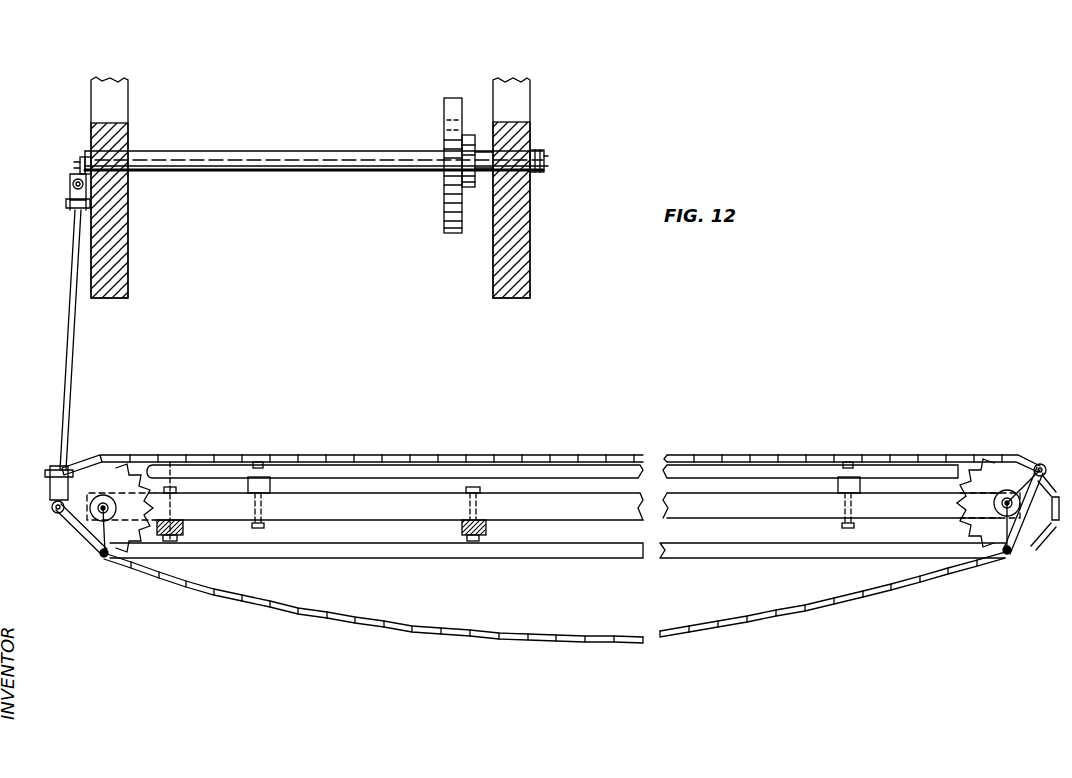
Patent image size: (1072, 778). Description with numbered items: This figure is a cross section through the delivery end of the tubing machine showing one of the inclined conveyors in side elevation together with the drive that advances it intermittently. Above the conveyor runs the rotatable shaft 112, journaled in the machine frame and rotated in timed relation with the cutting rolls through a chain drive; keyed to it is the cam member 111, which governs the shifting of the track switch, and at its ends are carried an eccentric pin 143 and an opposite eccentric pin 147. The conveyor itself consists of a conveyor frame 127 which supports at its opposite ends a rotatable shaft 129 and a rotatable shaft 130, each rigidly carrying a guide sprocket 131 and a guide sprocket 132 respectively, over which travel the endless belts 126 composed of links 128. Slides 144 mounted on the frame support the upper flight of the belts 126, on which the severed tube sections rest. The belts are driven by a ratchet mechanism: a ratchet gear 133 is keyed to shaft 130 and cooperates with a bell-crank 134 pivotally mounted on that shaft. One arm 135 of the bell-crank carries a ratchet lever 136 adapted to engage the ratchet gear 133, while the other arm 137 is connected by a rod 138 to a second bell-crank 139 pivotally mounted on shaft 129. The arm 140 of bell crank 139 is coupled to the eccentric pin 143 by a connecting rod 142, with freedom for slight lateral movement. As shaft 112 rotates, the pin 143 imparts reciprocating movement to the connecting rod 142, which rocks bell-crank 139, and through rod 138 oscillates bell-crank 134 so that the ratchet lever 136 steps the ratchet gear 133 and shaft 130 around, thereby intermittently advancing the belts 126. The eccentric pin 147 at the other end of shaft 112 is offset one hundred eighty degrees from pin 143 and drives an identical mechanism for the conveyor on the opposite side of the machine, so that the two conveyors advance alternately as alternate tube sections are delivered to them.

The cam member 111 is at (447, 220).
The rotatable shaft 112 is at (230, 157).
The endless belts 126 is at (437, 640).
The conveyor frame 127 is at (607, 516).
The links 128 is at (596, 632).
The rotatable shaft 129 is at (103, 508).
The rotatable shaft 130 is at (994, 503).
The guide sprocket 131 is at (125, 527).
The guide sprocket 132 is at (975, 520).
The ratchet gear 133 is at (990, 478).
The bell-crank 134 is at (1018, 540).
The arm 135 is at (1038, 465).
The ratchet lever 136 is at (1036, 513).
The arm 137 is at (1008, 557).
The rod 138 is at (553, 560).
The second bell-crank 139 is at (96, 537).
The arm 140 is at (58, 513).
The connecting rod 142 is at (68, 348).
The eccentric pin 143 is at (80, 165).
The slides 144 is at (482, 470).
The eccentric pin 147 is at (546, 158).